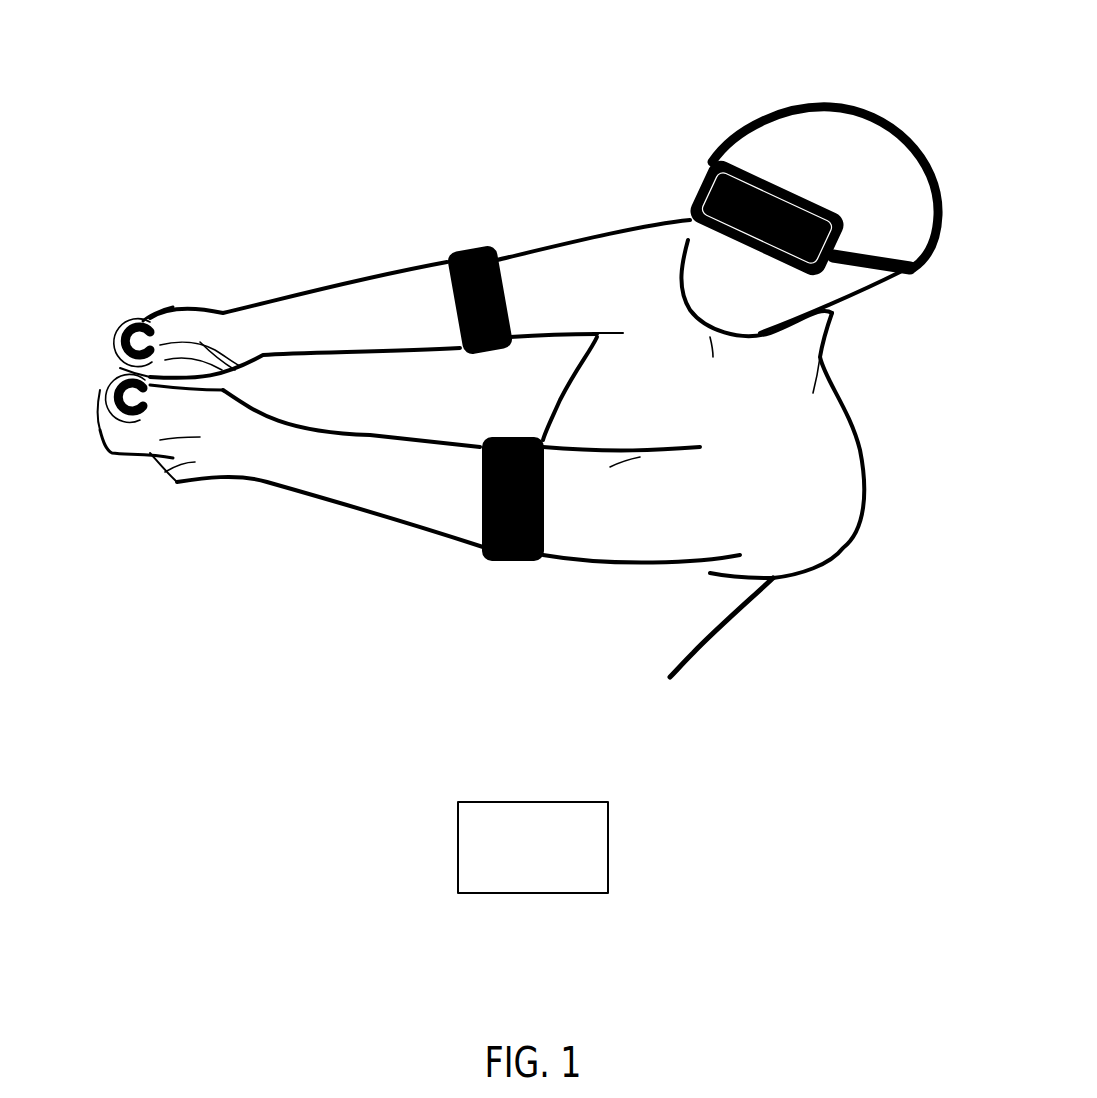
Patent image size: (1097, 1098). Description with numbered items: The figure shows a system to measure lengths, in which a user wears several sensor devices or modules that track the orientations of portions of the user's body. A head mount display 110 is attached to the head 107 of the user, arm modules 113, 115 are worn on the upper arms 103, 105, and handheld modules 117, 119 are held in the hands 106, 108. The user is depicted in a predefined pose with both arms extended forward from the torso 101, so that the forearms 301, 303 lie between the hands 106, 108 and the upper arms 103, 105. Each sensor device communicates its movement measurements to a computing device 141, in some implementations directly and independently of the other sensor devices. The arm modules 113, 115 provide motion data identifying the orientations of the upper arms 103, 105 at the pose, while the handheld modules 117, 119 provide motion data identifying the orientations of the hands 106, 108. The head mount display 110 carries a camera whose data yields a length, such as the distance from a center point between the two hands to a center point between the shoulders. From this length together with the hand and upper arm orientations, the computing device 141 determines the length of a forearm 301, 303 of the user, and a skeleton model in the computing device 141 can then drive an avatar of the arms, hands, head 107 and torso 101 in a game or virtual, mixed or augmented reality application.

The torso 101 is at (643, 632).
The upper arm 103 is at (623, 527).
The upper arm 105 is at (548, 260).
The hand 106 is at (182, 317).
The head 107 is at (823, 133).
The hand 108 is at (202, 463).
The head mount display 110 is at (708, 200).
The arm module 113 is at (503, 560).
The arm module 115 is at (472, 247).
The handheld module 117 is at (117, 320).
The handheld module 119 is at (112, 420).
The computing device 141 is at (533, 847).
The forearm 301 is at (343, 507).
The forearm 303 is at (333, 288).